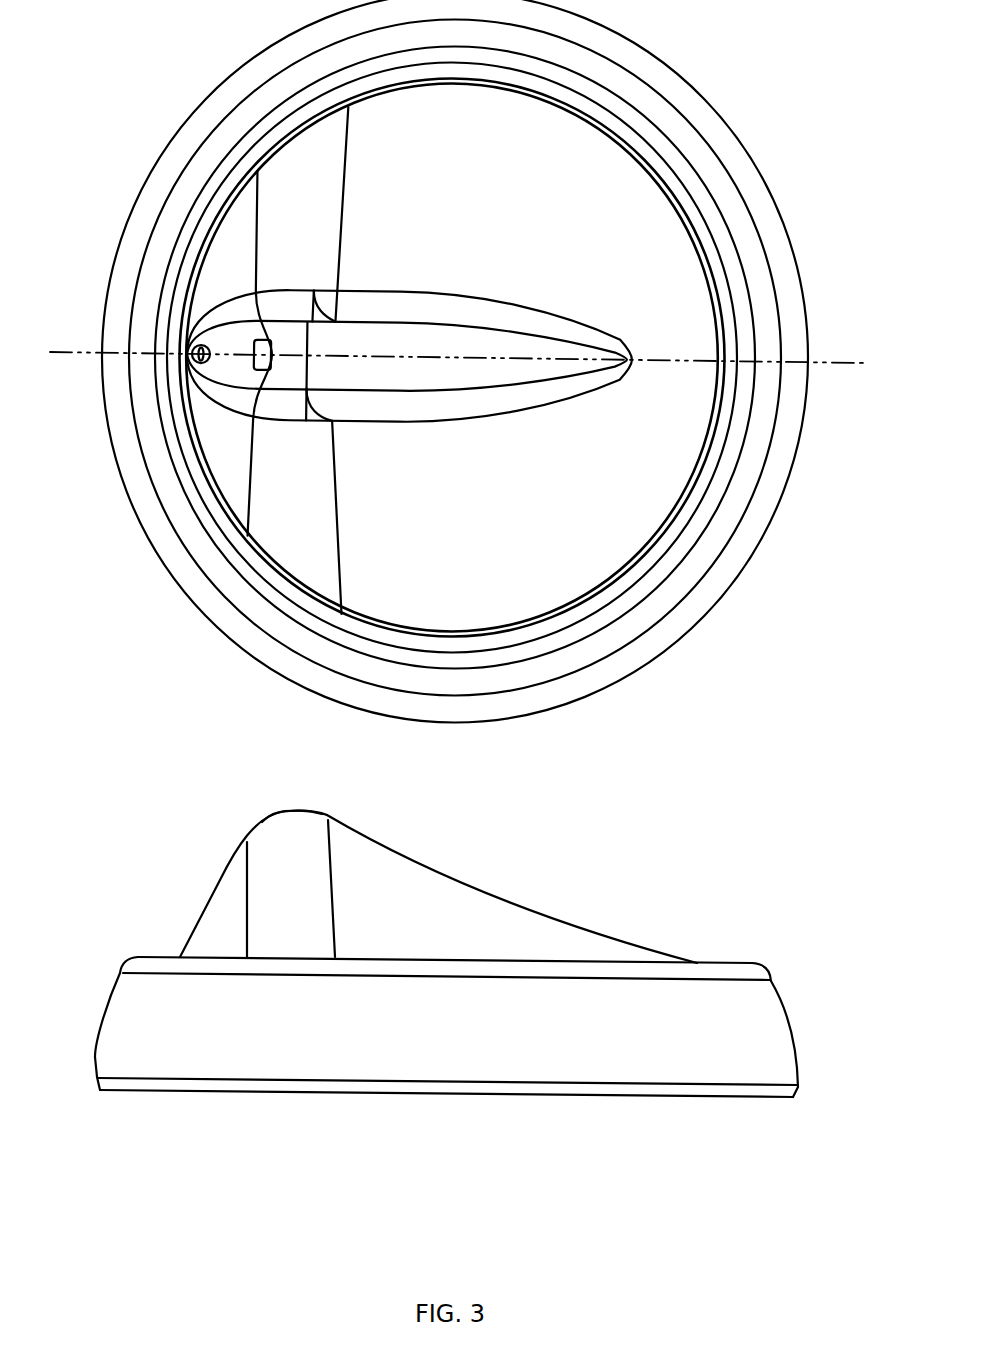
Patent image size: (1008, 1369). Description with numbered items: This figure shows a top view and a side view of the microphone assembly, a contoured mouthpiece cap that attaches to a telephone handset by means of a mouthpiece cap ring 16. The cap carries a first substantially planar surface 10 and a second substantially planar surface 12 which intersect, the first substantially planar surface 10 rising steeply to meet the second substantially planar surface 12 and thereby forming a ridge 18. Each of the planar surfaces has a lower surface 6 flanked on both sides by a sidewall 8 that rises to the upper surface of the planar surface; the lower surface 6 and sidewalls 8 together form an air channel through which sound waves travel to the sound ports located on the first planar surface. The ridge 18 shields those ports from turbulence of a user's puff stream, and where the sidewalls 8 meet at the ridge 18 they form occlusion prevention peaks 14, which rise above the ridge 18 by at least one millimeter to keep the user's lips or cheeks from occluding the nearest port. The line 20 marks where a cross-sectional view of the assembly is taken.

The lower surface 6 is at (450, 338).
The sidewall 8 is at (405, 302).
The first substantially planar surface 10 is at (208, 894).
The second substantially planar surface 12 is at (455, 876).
The occlusion prevention peaks 14 is at (318, 298).
The mouthpiece cap ring 16 is at (446, 1043).
The ridge 18 is at (283, 812).
The line 20 is at (52, 352).